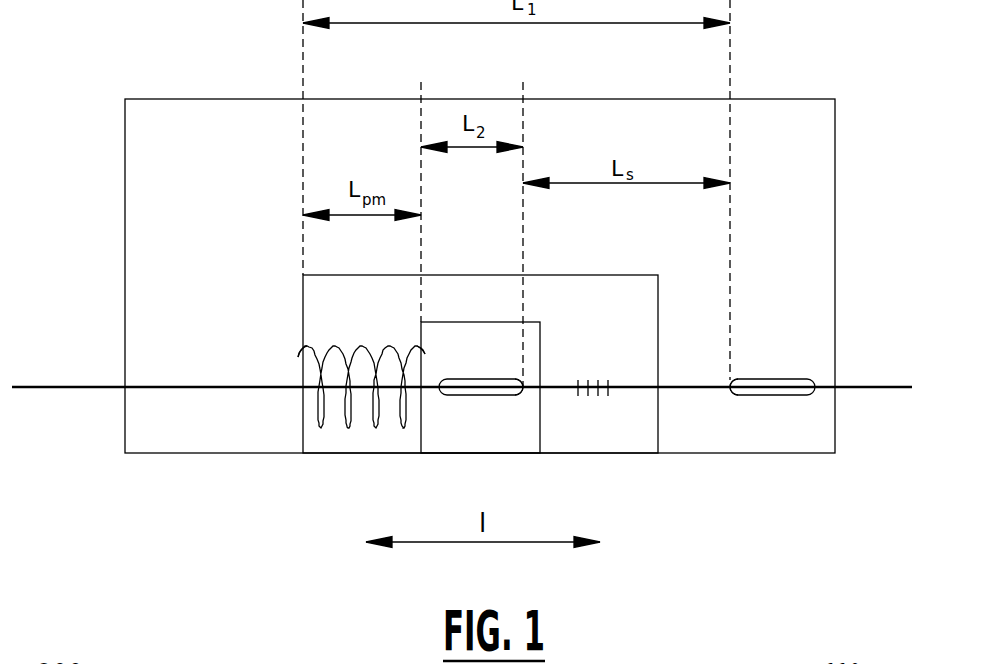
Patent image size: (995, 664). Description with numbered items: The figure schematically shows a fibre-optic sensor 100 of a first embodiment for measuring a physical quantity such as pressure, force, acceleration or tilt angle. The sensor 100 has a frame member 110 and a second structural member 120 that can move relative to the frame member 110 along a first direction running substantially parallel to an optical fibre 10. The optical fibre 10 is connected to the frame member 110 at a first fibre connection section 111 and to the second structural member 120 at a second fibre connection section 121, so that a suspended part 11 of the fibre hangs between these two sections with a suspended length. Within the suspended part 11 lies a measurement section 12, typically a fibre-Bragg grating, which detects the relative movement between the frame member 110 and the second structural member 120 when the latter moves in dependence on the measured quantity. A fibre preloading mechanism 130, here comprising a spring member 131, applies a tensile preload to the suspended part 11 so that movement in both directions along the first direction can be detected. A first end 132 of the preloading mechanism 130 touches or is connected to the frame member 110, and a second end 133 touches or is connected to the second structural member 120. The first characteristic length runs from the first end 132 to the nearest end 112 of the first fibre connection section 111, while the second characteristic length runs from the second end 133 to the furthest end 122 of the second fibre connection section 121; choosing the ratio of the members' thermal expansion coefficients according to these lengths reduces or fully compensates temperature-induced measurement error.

The fibre-optic sensor 100 is at (462, 307).
The optical fibre 10 is at (875, 389).
The suspended part 11 is at (645, 393).
The measurement section 12 is at (595, 397).
The frame member 110 is at (817, 110).
The first fibre connection section 111 is at (780, 396).
The nearest end of the first fibre connection section 112 is at (731, 388).
The second structural member 120 is at (500, 433).
The second fibre connection section 121 is at (488, 390).
The furthest end of the second fibre connection section 122 is at (524, 388).
The fibre preloading mechanism 130 is at (311, 442).
The spring member 131 is at (348, 365).
The first end of the fibre preloading mechanism 132 is at (303, 399).
The second end of the fibre preloading mechanism 133 is at (421, 412).